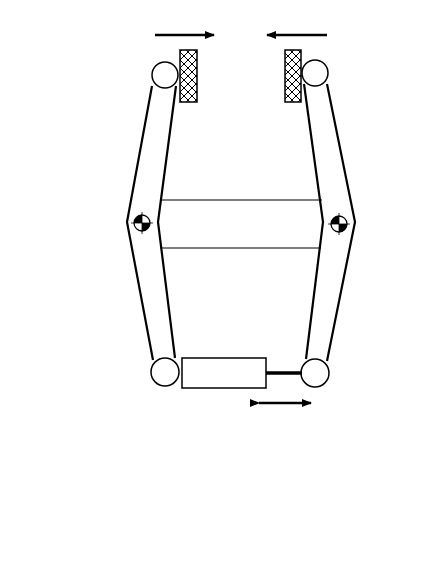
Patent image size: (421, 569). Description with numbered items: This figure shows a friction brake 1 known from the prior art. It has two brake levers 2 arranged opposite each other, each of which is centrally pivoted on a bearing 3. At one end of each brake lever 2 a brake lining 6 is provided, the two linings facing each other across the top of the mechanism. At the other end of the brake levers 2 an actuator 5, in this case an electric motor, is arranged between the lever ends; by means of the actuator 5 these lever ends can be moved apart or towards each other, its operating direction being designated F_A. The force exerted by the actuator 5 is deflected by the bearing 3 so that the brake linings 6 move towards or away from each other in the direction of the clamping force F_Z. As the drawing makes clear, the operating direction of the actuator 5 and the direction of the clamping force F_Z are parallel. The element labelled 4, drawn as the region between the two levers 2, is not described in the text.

The friction brake 1 is at (130, 313).
The brake lever 2 is at (147, 163).
The bearing 3 is at (131, 218).
The coupling element 4 is at (192, 233).
The actuator 5 is at (210, 405).
The brake lining 6 is at (183, 55).